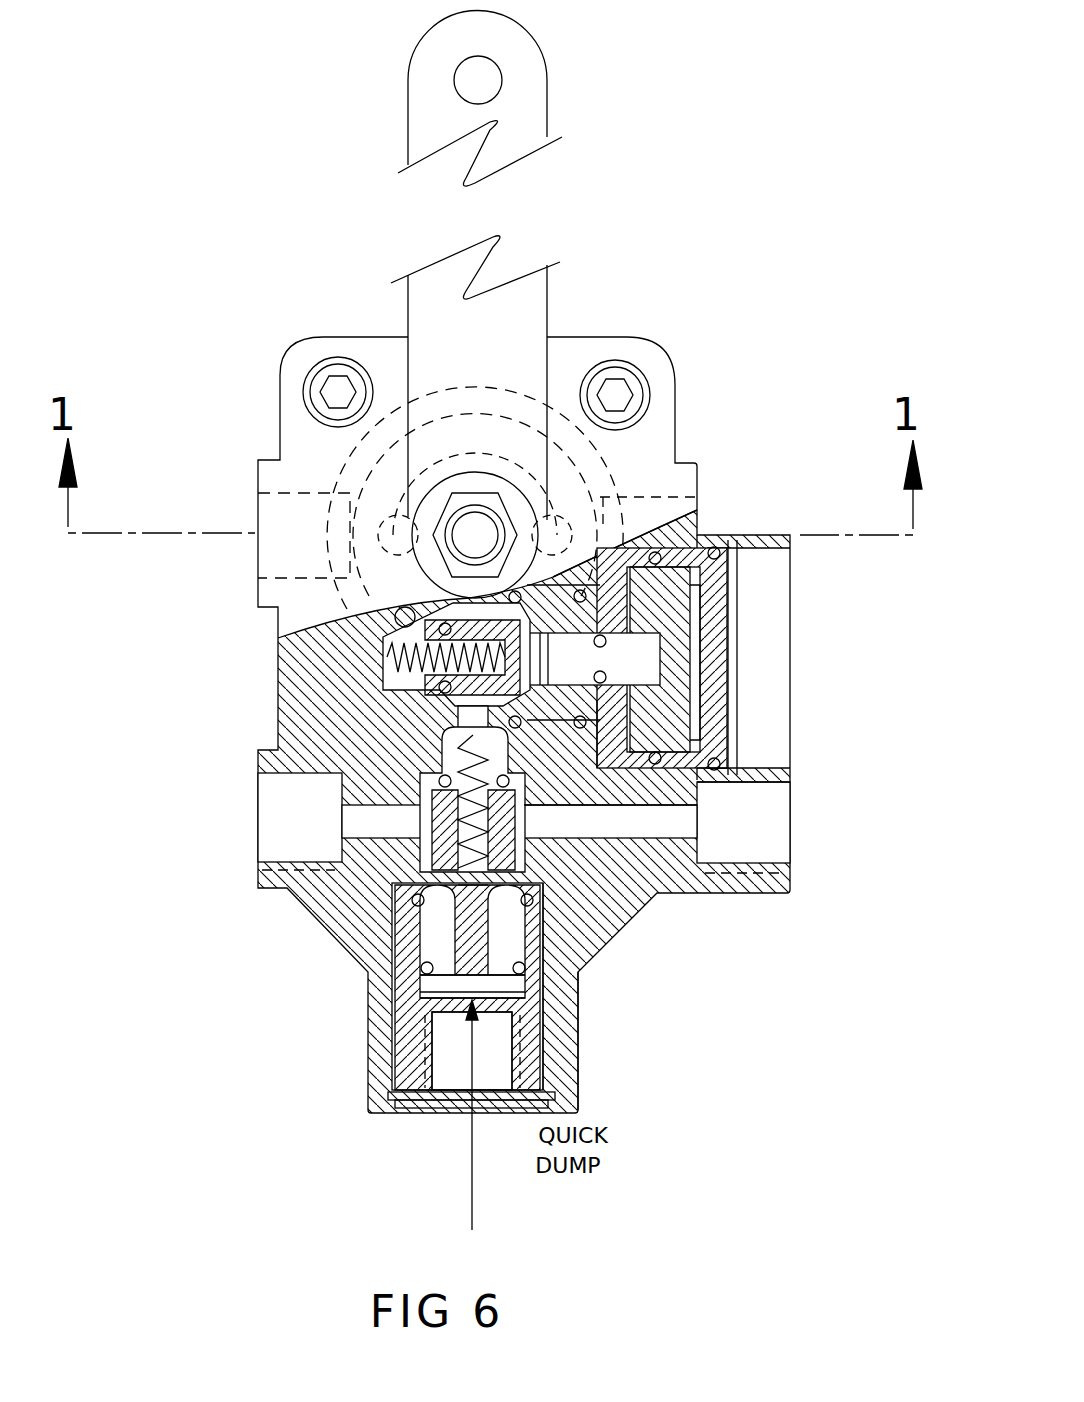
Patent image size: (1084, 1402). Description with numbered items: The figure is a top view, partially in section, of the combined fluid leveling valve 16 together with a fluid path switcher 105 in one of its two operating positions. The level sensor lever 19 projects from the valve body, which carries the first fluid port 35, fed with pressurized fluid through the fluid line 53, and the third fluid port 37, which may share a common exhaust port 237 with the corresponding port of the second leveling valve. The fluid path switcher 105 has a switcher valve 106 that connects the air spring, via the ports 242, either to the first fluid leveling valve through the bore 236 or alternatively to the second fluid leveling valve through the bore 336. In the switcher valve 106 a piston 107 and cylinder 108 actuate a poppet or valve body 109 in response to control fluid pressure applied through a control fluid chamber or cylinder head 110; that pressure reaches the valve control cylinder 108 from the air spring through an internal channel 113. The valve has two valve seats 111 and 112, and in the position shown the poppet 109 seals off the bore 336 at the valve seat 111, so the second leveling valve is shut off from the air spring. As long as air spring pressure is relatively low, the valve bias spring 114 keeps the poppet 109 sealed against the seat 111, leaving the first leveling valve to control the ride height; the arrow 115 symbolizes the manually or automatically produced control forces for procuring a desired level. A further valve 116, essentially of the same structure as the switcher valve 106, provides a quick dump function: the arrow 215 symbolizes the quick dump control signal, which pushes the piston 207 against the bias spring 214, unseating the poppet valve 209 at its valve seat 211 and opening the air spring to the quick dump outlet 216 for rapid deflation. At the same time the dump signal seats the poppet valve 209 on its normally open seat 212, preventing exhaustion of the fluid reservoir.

The combined fluid leveling valve 16 is at (358, 328).
The level sensor lever 19 is at (515, 330).
The third fluid port 37 is at (603, 510).
The common exhaust port 237 is at (637, 507).
The bore 336 is at (637, 527).
The fluid path switcher 105 is at (718, 520).
The first fluid port 35 is at (393, 530).
The fluid line 53 is at (308, 550).
The bore 236 is at (396, 619).
The valve bias spring 114 is at (382, 692).
The switcher valve 106 is at (425, 650).
The valve seat 112 is at (455, 700).
The ports 242 is at (268, 832).
The poppet 109 is at (355, 780).
The normally open seat 212 is at (395, 805).
The bias spring 214 is at (425, 840).
The valve seat 211 is at (420, 900).
The poppet valve 209 is at (370, 1042).
The arrow 215 is at (470, 1129).
The piston 207 is at (580, 1033).
The quick dump outlet 216 is at (558, 977).
The further valve 116 is at (578, 987).
The valve seat 111 is at (573, 800).
The piston 107 is at (648, 718).
The cylinder 108 is at (700, 765).
The internal channel 113 is at (700, 790).
The control fluid chamber 110 is at (693, 717).
The arrow 115 is at (672, 658).